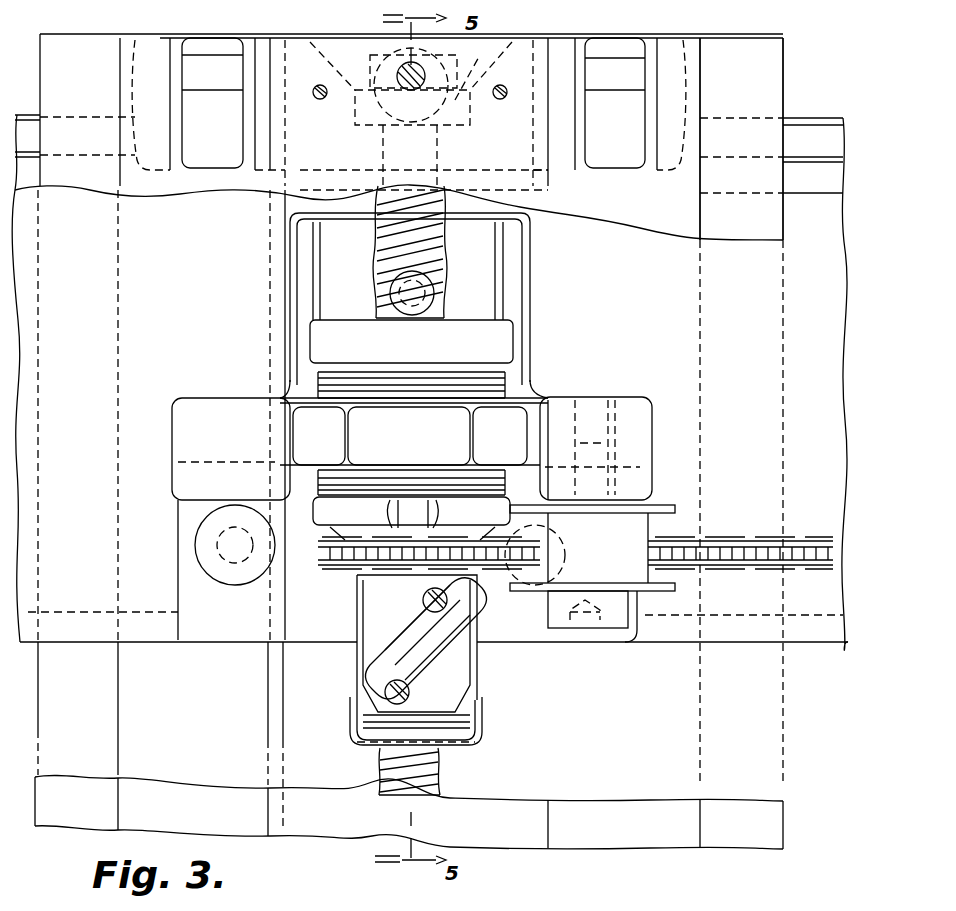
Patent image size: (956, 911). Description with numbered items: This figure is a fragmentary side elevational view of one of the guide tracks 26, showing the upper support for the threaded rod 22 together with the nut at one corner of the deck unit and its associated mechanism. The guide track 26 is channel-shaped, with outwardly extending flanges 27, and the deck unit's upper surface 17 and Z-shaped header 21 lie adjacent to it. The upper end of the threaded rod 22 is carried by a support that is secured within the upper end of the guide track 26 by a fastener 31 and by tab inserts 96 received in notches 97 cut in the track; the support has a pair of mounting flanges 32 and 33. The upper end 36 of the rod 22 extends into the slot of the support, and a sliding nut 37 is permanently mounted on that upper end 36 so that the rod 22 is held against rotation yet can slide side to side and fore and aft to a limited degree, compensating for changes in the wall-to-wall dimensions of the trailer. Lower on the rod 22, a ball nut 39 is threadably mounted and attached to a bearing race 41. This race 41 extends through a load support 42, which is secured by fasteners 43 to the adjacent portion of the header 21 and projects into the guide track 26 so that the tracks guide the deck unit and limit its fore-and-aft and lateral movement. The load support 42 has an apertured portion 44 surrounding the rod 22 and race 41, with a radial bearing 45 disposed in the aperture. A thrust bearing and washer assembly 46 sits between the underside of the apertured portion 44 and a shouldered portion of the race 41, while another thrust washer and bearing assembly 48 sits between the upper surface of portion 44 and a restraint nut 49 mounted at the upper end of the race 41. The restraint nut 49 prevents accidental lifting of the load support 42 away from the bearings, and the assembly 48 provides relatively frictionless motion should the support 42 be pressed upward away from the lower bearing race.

The upper surface 17 is at (817, 133).
The Z-shaped header 21 is at (843, 180).
The threaded rod 22 is at (440, 778).
The guide track 26 is at (640, 830).
The outwardly extending flange 27 is at (767, 60).
The fastener 31 is at (427, 80).
The mounting flange 32 is at (163, 36).
The mounting flange 33 is at (690, 37).
The upper end of rod 36 is at (423, 152).
The sliding nut 37 is at (365, 130).
The ball nut 39 is at (470, 667).
The bearing race 41 is at (323, 522).
The load support 42 is at (190, 526).
The fastener 43 is at (453, 288).
The apertured portion 44 is at (410, 436).
The radial bearing 45 is at (210, 568).
The thrust bearing and washer assembly 46 is at (485, 480).
The thrust washer and bearing assembly 48 is at (430, 383).
The restraint nut 49 is at (503, 343).
The tab insert 96 is at (193, 60).
The notch 97 is at (178, 97).